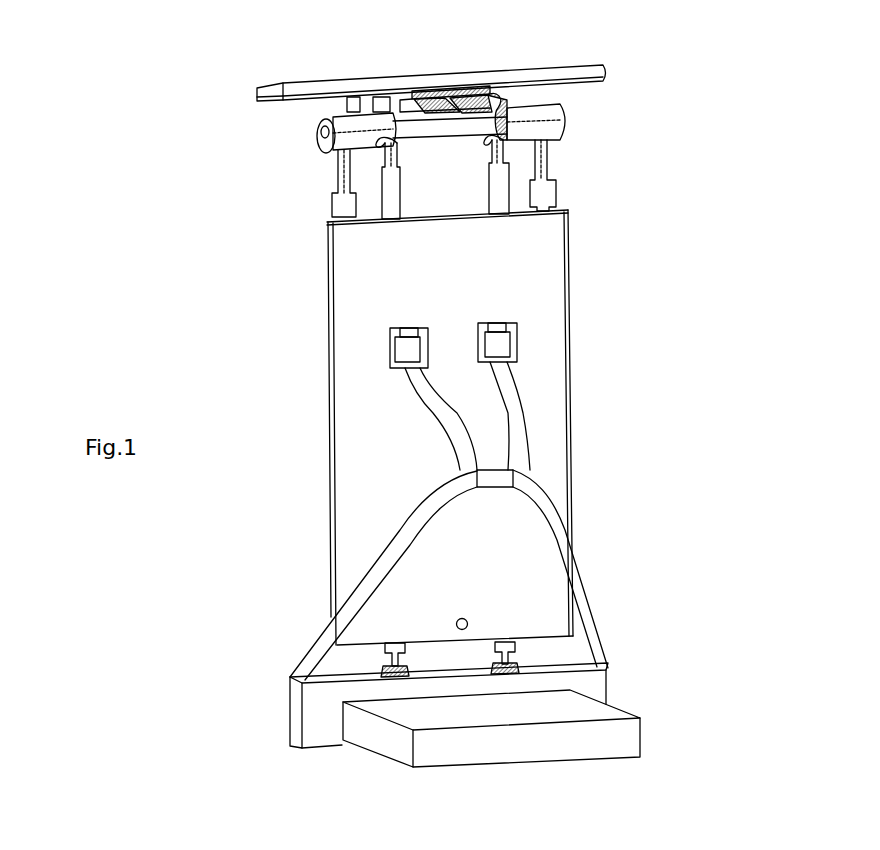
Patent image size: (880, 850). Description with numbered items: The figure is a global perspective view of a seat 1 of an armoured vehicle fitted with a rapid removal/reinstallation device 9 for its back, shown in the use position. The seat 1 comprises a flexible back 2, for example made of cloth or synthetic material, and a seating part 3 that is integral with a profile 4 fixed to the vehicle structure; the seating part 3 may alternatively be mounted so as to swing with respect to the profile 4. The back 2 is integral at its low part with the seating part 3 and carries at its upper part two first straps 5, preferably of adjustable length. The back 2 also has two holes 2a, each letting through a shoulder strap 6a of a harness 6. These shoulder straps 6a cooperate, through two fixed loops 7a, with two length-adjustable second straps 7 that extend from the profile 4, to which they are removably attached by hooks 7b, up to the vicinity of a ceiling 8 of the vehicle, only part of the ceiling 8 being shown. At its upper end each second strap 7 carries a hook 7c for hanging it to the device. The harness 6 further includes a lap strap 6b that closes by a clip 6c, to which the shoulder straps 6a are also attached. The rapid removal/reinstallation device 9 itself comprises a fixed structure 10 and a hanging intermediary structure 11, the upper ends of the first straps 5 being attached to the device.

The seat 1 is at (247, 568).
The flexible back 2 is at (357, 398).
The holes 2a is at (390, 340).
The seating part 3 is at (630, 737).
The profile 4 is at (298, 708).
The first straps 5 is at (343, 182).
The harness 6 is at (583, 585).
The shoulder straps 6a is at (453, 427).
The lap strap 6b is at (420, 528).
The clip 6c is at (497, 480).
The second straps 7 is at (497, 197).
The fixed loops 7a is at (405, 348).
The hooks 7b is at (403, 663).
The hook 7c is at (395, 143).
The ceiling 8 is at (603, 73).
The rapid removal/reinstallation device 9 is at (580, 116).
The fixed structure 10 is at (388, 100).
The hanging intermediary structure 11 is at (357, 113).